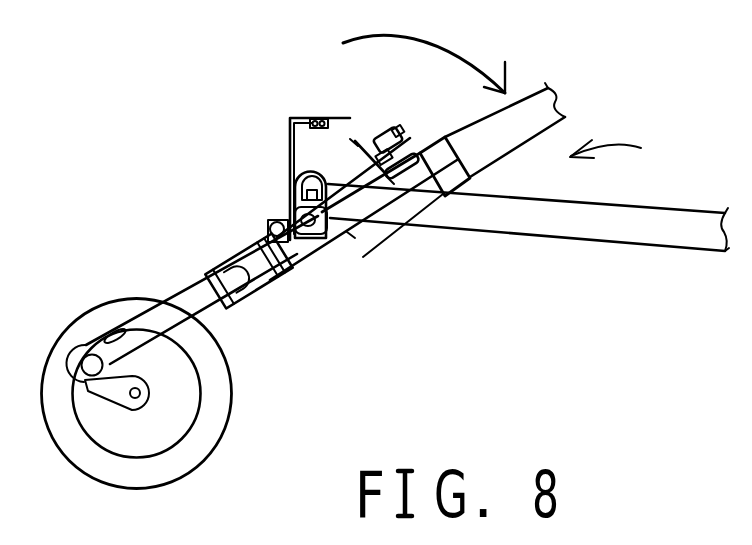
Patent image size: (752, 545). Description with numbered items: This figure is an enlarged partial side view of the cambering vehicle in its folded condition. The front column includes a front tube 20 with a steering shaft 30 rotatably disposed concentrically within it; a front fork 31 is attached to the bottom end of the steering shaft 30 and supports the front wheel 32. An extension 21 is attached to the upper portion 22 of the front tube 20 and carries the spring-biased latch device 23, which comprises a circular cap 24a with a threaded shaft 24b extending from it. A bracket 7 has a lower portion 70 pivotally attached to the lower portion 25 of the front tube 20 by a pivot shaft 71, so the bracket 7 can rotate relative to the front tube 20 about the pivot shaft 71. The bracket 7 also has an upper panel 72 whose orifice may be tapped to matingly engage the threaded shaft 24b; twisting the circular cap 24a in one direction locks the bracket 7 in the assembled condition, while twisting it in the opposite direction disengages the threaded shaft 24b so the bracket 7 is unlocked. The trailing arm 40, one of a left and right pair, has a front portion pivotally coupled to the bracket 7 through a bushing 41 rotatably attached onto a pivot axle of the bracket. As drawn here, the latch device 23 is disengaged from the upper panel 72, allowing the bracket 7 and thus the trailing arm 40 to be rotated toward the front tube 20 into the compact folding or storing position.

The bracket 7 is at (284, 139).
The front tube 20 is at (357, 237).
The extension 21 is at (361, 143).
The upper portion 22 is at (430, 179).
The spring-biased latch device 23 is at (400, 131).
The circular cap 24a is at (420, 140).
The threaded shaft 24b is at (391, 182).
The lower portion 25 is at (299, 268).
The steering shaft 30 is at (549, 88).
The front fork 31 is at (152, 330).
The front wheel 32 is at (107, 473).
The trailing arm 40 is at (668, 242).
The bushing 41 is at (348, 234).
The lower portion 70 is at (290, 213).
The pivot shaft 71 is at (262, 224).
The upper panel 72 is at (338, 117).